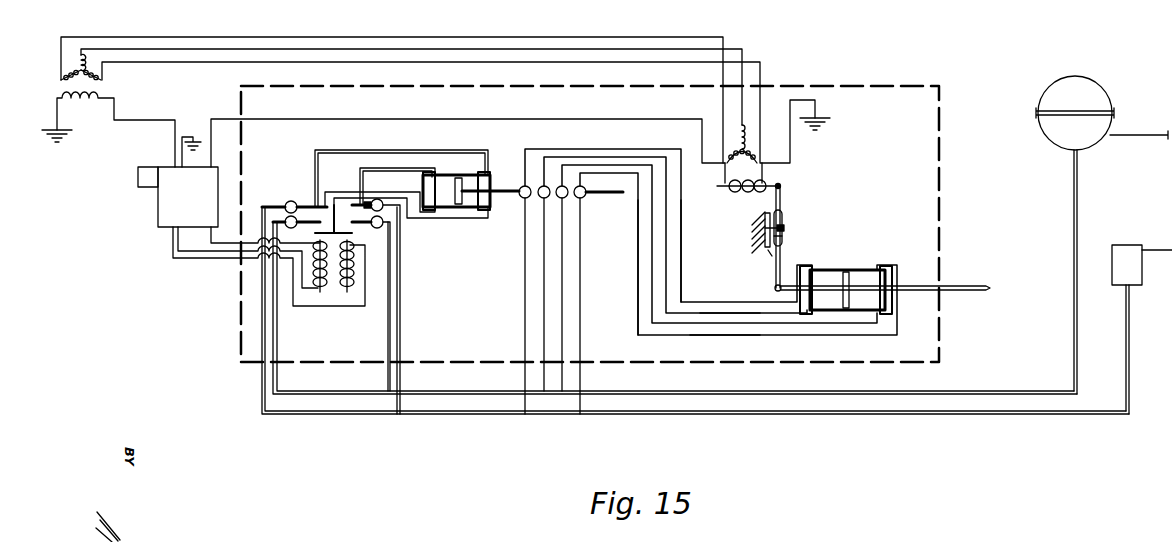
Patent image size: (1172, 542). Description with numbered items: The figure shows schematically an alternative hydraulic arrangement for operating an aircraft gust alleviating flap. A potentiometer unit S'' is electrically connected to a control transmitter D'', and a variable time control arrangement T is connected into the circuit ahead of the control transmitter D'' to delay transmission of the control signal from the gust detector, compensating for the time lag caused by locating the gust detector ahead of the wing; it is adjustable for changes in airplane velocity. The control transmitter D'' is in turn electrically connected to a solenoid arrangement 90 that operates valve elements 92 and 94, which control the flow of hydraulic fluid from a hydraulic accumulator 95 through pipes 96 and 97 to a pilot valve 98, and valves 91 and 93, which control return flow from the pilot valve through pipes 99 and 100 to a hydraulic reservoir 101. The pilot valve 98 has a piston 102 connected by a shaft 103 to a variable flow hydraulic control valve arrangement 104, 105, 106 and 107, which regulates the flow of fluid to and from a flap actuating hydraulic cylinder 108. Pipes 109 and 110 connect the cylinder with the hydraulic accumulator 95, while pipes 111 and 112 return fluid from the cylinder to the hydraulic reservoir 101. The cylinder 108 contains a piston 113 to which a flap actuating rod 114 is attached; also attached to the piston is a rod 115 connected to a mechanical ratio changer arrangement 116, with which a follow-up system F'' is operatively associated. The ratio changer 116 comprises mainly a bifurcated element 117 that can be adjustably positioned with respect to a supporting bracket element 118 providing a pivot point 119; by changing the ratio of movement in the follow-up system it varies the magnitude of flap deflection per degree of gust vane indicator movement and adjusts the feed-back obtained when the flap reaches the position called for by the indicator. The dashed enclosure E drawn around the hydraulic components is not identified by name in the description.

The solenoid arrangement 90 is at (352, 270).
The valve 91 is at (300, 202).
The valve element 92 is at (307, 236).
The valve 93 is at (396, 183).
The valve element 94 is at (379, 227).
The hydraulic accumulator 95 is at (1092, 86).
The pipe 96 is at (276, 345).
The pipe 97 is at (388, 345).
The pilot valve 98 is at (473, 178).
The pipe 99 is at (260, 392).
The pipe 100 is at (399, 352).
The hydraulic reservoir 101 is at (1120, 249).
The piston 102 is at (461, 200).
The shaft 103 is at (521, 178).
The variable flow hydraulic control valve 104 is at (523, 198).
The variable flow hydraulic control valve 105 is at (541, 199).
The variable flow hydraulic control valve 106 is at (566, 199).
The variable flow hydraulic control valve 107 is at (583, 198).
The flap actuating hydraulic cylinder 108 is at (818, 271).
The pipe 109 is at (707, 335).
The pipe 110 is at (716, 295).
The pipe 111 is at (638, 298).
The pipe 112 is at (682, 254).
The piston 113 is at (856, 306).
The flap actuating rod 114 is at (936, 278).
The rod 115 is at (775, 290).
The mechanical ratio changer arrangement 116 is at (785, 229).
The bifurcated element 117 is at (783, 216).
The supporting bracket element 118 is at (765, 244).
The pivot point 119 is at (782, 237).
The variable time control arrangement T is at (140, 177).
The control transmitter D is at (160, 217).
The potentiometer unit S is at (104, 80).
The follow-up system F is at (762, 167).
The control unit enclosure E is at (831, 362).